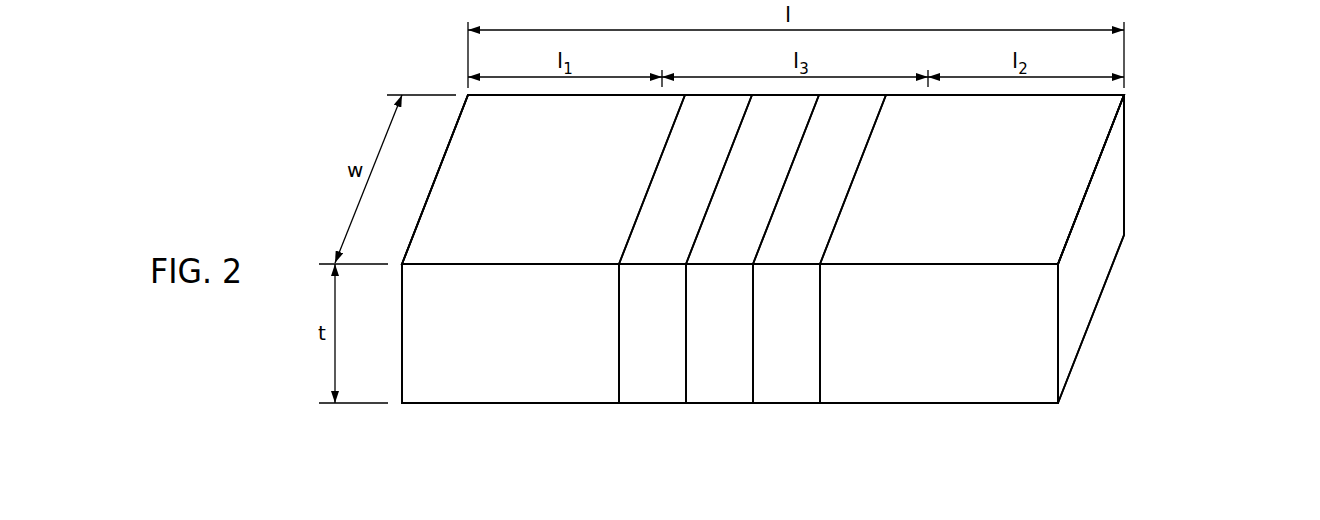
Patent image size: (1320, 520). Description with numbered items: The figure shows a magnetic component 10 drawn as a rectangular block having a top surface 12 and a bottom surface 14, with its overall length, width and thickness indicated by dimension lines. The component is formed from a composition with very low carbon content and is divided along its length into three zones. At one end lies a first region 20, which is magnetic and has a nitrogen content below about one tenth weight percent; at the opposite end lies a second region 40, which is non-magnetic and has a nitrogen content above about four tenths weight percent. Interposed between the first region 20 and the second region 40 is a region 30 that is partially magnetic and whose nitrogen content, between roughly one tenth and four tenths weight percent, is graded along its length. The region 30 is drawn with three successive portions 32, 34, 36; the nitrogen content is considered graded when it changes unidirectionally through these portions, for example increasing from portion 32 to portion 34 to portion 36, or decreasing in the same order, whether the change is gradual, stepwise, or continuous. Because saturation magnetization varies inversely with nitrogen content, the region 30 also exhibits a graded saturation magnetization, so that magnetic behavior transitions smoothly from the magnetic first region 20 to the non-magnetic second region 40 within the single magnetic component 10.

The magnetic component 10 is at (1225, 80).
The top surface 12 is at (1040, 235).
The bottom surface 14 is at (1092, 318).
The first region 20 is at (551, 186).
The region 30 is at (752, 265).
The portion 32 is at (699, 186).
The portion 34 is at (766, 186).
The portion 36 is at (831, 186).
The second region 40 is at (997, 186).